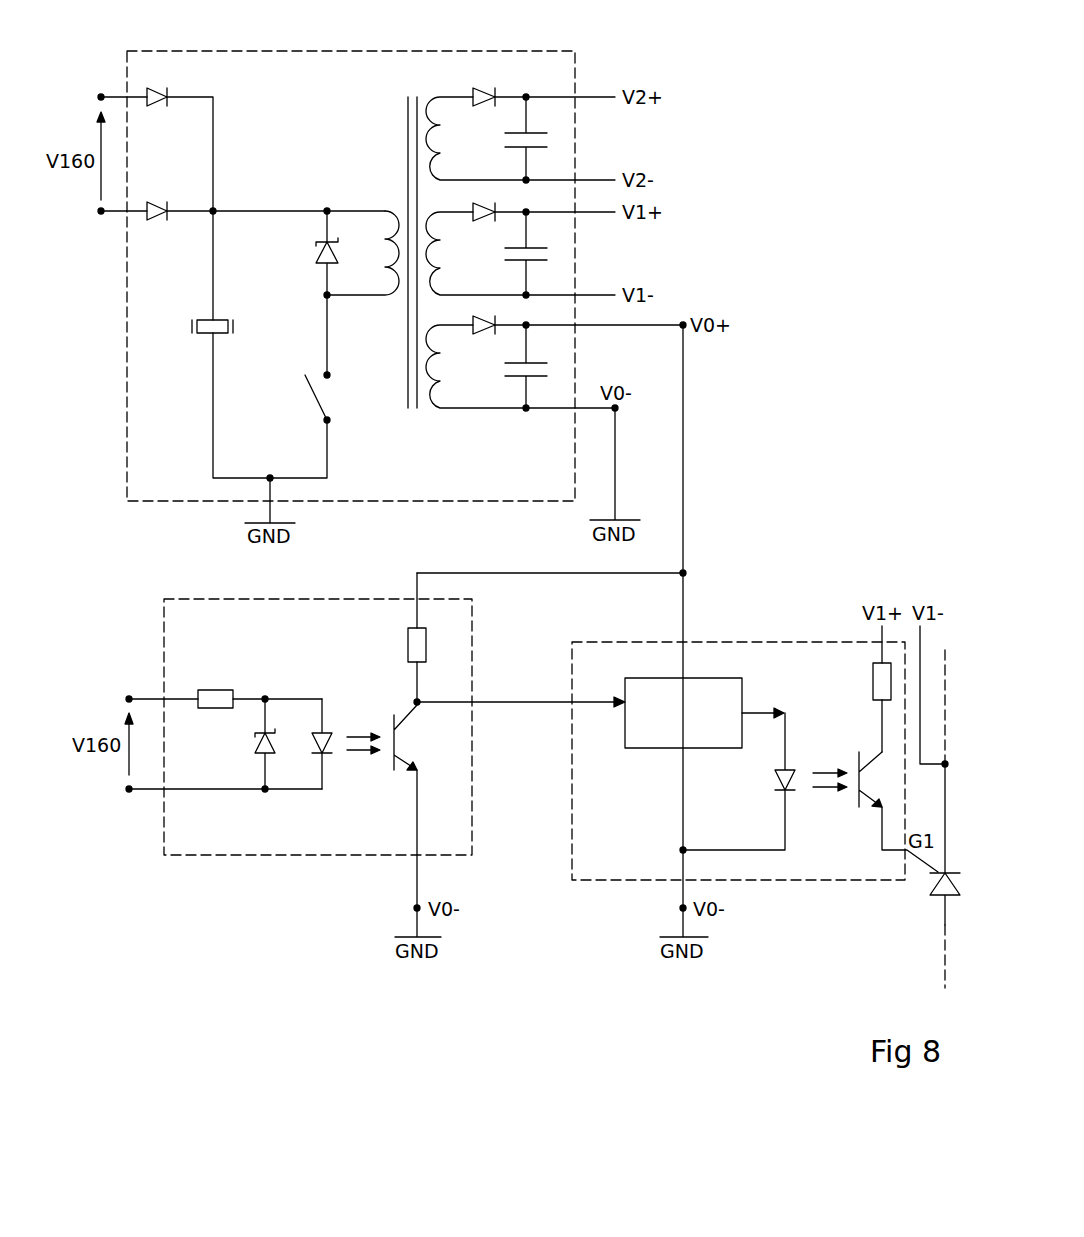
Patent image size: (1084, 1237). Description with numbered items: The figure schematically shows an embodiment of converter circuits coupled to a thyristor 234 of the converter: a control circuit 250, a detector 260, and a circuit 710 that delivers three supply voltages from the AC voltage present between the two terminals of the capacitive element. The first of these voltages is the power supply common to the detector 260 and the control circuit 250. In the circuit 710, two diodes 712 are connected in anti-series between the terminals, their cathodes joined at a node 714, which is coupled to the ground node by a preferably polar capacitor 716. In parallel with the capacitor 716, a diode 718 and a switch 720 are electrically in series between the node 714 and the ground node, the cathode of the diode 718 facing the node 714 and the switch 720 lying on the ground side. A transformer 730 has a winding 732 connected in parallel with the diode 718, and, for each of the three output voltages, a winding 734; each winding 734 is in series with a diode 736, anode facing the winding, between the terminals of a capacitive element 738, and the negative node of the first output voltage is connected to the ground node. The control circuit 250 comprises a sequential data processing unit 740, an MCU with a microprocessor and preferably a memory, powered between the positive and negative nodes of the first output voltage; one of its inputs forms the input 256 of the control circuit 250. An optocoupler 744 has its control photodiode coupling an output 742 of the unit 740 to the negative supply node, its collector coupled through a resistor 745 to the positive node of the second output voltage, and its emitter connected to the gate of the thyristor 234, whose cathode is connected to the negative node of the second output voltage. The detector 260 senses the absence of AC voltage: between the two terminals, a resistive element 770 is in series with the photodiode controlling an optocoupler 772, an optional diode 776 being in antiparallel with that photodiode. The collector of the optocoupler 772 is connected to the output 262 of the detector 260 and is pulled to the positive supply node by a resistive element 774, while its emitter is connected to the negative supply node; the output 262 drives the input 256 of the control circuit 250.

The circuit for delivering voltages 710 is at (515, 51).
The diodes 712 is at (153, 89).
The node 714 is at (238, 210).
The capacitor 716 is at (218, 334).
The diode 718 is at (320, 252).
The switch 720 is at (320, 396).
The transformer 730 is at (465, 234).
The winding 732 is at (382, 240).
The winding 734 is at (440, 253).
The diode 736 is at (481, 90).
The capacitive element 738 is at (538, 133).
The sequential data processing unit 740 is at (706, 696).
The output of unit 740 742 is at (748, 712).
The optocoupler 744 is at (827, 805).
The resistor 745 is at (873, 681).
The resistive element 770 is at (215, 697).
The optocoupler 772 is at (355, 717).
The resistive element 774 is at (422, 645).
The diode 776 is at (270, 747).
The input of control circuit 256 is at (623, 708).
The detector 260 is at (233, 856).
The output of detector 262 is at (420, 706).
The control circuit 250 is at (620, 880).
The thyristor 234 is at (940, 898).